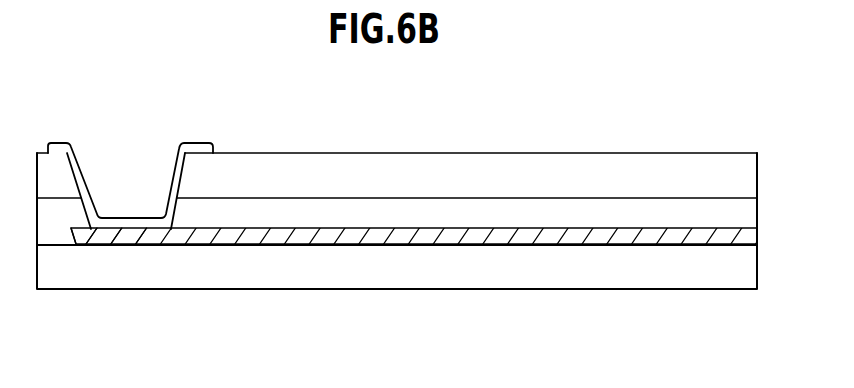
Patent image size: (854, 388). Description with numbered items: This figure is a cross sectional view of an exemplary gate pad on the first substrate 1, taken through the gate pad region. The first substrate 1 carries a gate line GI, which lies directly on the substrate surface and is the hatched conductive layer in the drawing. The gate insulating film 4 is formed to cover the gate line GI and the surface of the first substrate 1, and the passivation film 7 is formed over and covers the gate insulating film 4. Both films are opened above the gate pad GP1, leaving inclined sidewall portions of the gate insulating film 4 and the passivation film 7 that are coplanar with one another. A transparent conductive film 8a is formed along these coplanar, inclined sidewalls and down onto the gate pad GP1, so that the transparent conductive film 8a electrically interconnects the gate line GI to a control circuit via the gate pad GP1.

The first substrate 1 is at (733, 271).
The gate insulating film 4 is at (733, 219).
The passivation film 7 is at (733, 178).
The transparent conductive film 8a is at (195, 143).
The gate pad GP1 is at (132, 232).
The gate line GI is at (433, 232).